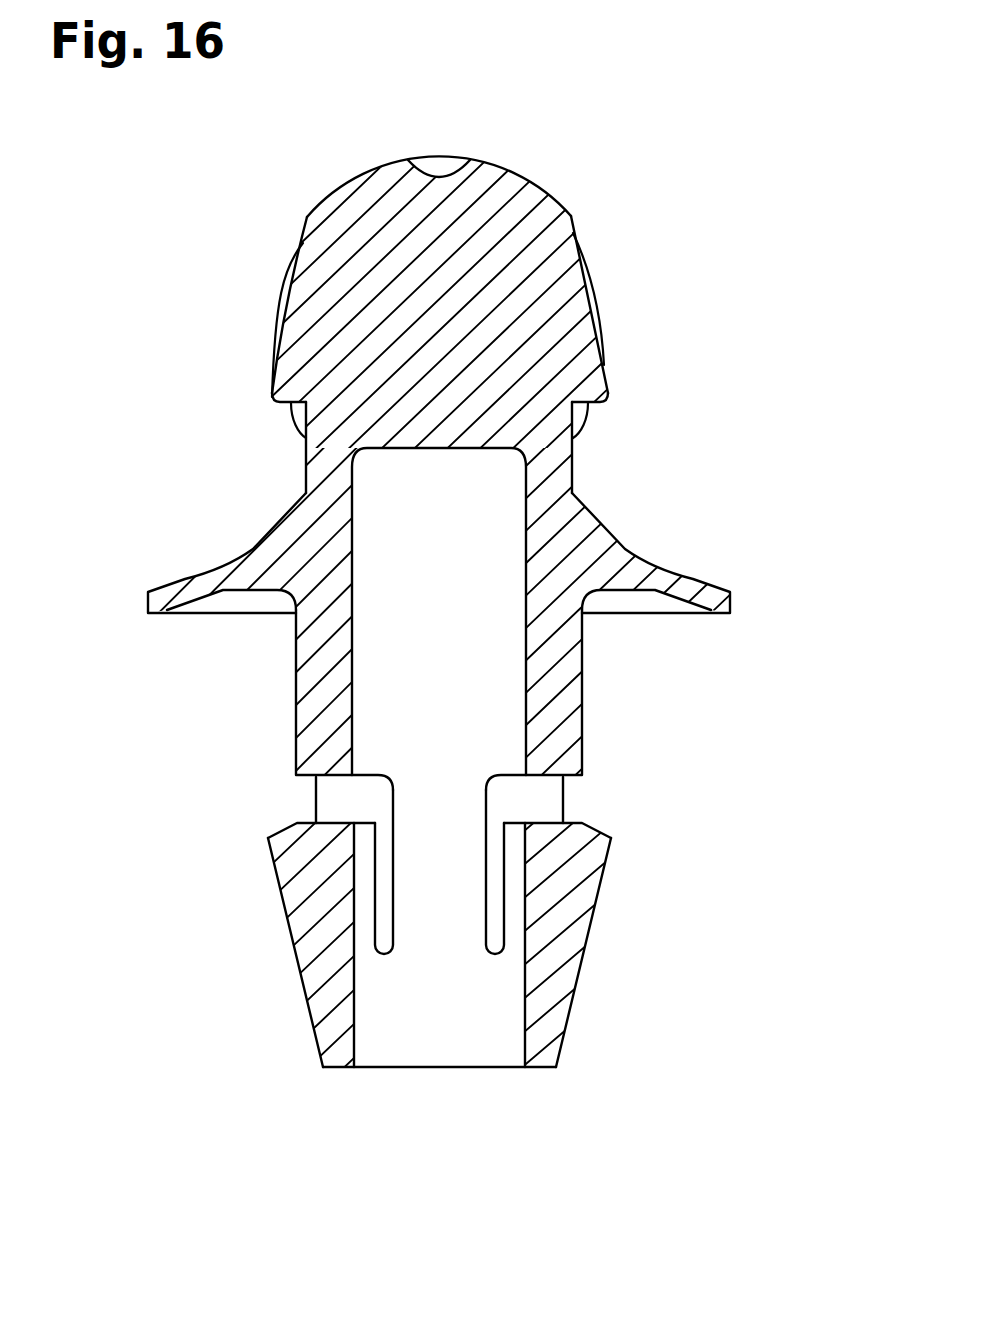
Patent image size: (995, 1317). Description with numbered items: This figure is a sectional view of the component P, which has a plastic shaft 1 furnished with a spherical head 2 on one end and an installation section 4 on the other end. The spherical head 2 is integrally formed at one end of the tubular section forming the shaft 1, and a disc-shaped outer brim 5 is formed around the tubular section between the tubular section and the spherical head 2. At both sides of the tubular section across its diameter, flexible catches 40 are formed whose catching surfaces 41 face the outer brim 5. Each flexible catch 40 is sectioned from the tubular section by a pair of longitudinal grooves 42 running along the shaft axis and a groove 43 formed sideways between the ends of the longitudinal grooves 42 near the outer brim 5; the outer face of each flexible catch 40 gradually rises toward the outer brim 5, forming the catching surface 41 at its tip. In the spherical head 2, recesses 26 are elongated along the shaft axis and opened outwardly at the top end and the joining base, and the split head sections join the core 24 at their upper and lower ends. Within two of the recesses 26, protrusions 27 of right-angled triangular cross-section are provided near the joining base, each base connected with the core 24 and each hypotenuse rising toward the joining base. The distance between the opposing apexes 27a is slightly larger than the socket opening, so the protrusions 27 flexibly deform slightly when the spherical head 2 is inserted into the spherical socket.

The shaft 1 is at (581, 703).
The spherical head 2 is at (549, 125).
The installation section 4 is at (627, 933).
The outer brim 5 is at (725, 593).
The core 24 is at (442, 213).
The recess 26 is at (288, 293).
The protrusion 27 is at (275, 358).
The apex 27a is at (273, 400).
The flexible catch 40 is at (320, 898).
The catching surface 41 is at (280, 832).
The longitudinal groove 42 is at (388, 923).
The groove 43 is at (338, 797).
The component P is at (664, 148).